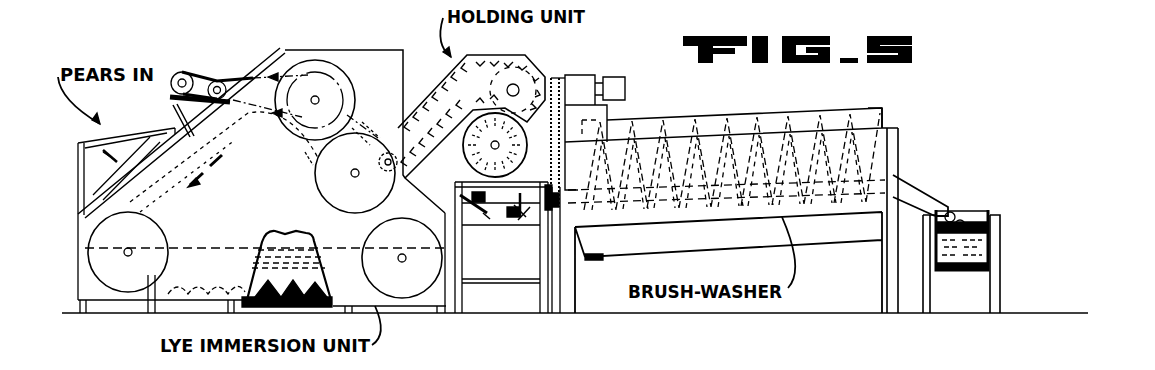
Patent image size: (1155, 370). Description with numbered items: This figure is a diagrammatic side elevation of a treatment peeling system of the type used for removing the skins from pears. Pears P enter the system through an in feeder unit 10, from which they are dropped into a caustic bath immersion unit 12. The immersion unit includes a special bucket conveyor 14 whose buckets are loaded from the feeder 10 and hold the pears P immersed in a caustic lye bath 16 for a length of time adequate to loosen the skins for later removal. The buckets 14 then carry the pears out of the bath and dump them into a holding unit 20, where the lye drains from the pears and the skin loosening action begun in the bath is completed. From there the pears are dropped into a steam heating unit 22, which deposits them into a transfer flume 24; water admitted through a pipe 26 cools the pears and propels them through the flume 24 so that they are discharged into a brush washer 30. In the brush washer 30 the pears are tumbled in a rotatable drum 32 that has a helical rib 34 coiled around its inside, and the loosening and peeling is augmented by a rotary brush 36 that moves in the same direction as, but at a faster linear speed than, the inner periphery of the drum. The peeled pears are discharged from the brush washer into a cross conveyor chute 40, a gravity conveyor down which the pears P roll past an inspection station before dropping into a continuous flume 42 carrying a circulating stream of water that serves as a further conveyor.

The in feeder unit 10 is at (152, 93).
The caustic bath immersion unit 12 is at (125, 281).
The bucket conveyor 14 is at (237, 123).
The caustic (lye) bath 16 is at (280, 248).
The pears P is at (314, 282).
The holding unit 20 is at (538, 60).
The steam heating unit 22 is at (438, 178).
The transfer flume 24 is at (520, 198).
The pipe 26 is at (483, 213).
The brush washer 30 is at (672, 113).
The rotatable drum 32 is at (748, 112).
The helical rib 34 is at (863, 108).
The rotary brush 36 is at (893, 128).
The cross conveyor chute 40 is at (927, 187).
The continuous flume 42 is at (990, 255).